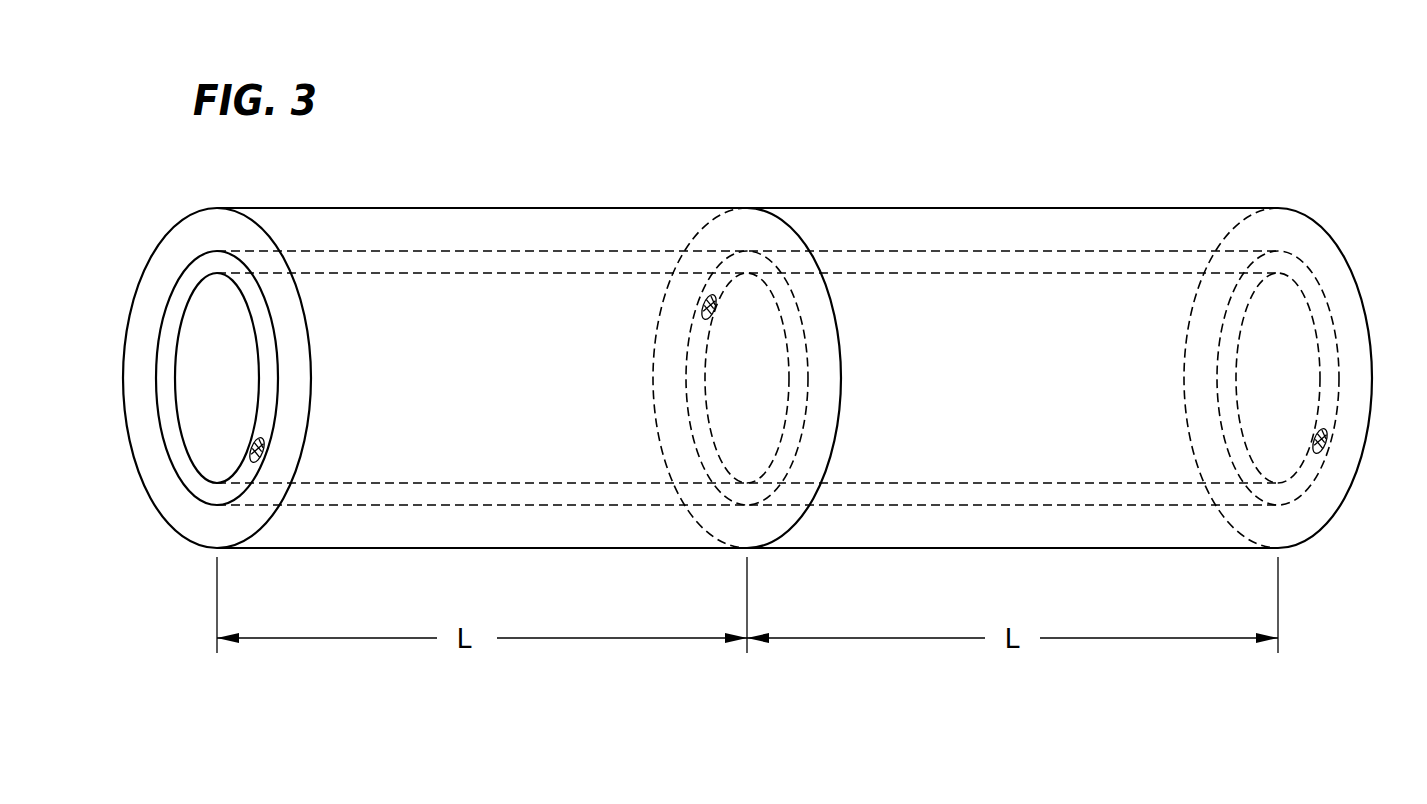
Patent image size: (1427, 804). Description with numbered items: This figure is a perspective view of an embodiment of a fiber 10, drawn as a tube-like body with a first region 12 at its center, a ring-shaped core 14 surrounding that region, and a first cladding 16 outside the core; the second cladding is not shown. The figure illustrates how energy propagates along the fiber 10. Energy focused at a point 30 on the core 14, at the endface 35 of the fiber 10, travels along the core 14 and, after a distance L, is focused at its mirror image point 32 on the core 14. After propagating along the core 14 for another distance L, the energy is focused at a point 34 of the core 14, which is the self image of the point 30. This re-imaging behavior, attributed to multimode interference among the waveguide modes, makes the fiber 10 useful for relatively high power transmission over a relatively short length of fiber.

The fiber 10 is at (735, 326).
The first region 12 is at (208, 400).
The ring-shaped core 14 is at (172, 353).
The first cladding 16 is at (160, 278).
The point 30 is at (252, 460).
The mirror image point 32 is at (709, 297).
The point 34 is at (1323, 453).
The endface 35 is at (160, 518).